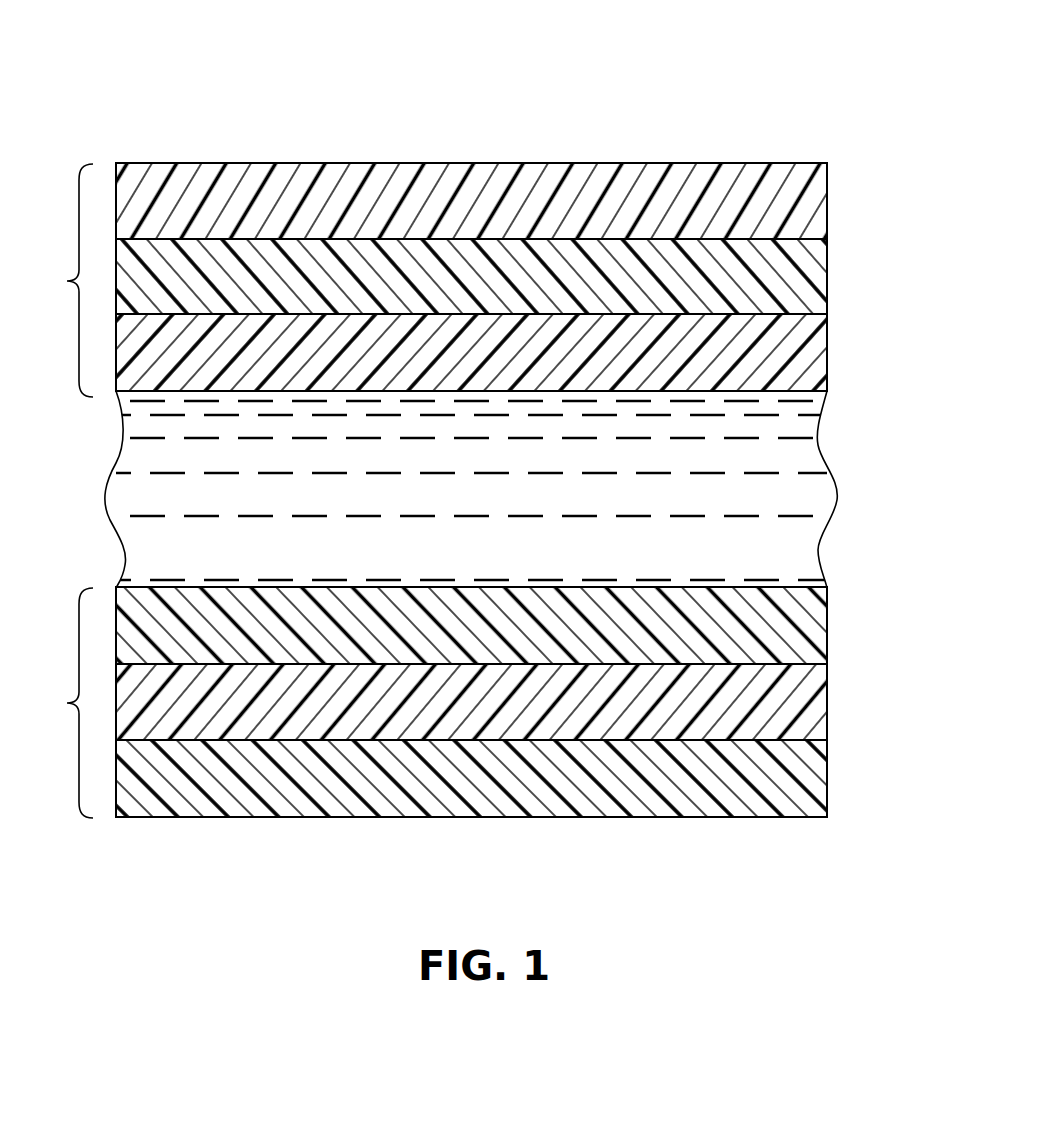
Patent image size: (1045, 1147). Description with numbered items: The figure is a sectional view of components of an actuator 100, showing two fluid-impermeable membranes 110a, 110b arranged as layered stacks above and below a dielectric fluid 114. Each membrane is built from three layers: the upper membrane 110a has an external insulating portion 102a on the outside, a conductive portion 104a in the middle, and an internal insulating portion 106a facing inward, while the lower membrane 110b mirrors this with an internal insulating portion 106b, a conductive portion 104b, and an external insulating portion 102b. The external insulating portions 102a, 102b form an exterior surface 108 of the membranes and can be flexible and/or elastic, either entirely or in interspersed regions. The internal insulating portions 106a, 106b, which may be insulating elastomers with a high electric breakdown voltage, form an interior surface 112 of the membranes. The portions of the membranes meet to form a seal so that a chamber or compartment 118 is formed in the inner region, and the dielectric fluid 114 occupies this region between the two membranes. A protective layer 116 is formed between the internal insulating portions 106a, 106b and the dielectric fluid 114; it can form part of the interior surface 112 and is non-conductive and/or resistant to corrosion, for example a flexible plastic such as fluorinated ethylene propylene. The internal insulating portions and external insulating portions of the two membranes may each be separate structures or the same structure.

The actuator 100 is at (749, 90).
The exterior surface 108 is at (802, 143).
The external insulating portion 102a is at (818, 200).
The conductive portion 104a is at (818, 276).
The internal insulating portion 106a is at (818, 341).
The fluid-impermeable membrane 110a is at (55, 280).
The interior surface 112 is at (798, 408).
The dielectric fluid 114 is at (760, 474).
The protective layer 116 is at (125, 584).
The chamber or compartment 118 is at (778, 552).
The internal insulating portion 106b is at (818, 638).
The conductive portion 104b is at (818, 708).
The external insulating portion 102b is at (818, 788).
The fluid-impermeable membrane 110b is at (55, 703).